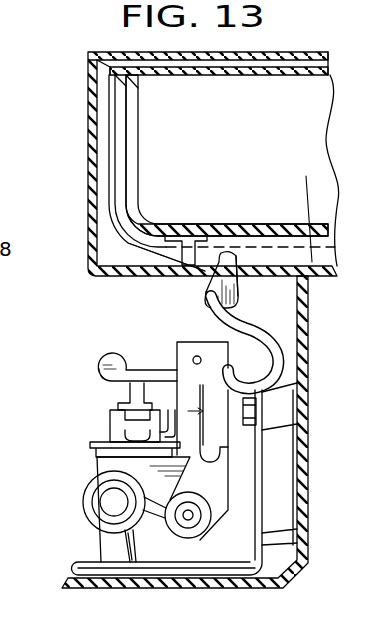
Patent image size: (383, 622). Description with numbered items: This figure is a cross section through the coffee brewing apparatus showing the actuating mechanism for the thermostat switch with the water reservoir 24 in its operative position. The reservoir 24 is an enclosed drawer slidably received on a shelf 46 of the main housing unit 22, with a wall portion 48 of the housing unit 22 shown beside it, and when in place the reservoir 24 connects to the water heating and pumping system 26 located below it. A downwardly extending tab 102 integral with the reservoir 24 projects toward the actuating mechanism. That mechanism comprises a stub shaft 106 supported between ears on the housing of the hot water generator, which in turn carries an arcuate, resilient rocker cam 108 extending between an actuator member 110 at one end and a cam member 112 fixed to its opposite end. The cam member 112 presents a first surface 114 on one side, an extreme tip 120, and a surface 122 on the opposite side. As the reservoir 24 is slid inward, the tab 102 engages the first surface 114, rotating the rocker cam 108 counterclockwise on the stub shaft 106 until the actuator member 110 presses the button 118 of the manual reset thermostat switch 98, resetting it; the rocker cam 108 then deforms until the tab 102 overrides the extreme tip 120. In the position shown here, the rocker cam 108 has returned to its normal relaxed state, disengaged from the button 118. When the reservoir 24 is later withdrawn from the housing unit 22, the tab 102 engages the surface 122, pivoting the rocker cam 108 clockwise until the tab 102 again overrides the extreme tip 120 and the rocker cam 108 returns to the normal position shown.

The main housing unit 22 is at (78, 132).
The water reservoir 24 is at (139, 103).
The water heating and pumping system 26 is at (76, 487).
The shelf 46 is at (313, 279).
The bottom wall 48 is at (307, 207).
The manual reset thermostat switch 98 is at (115, 428).
The tab 102 is at (160, 246).
The stub shaft 106 is at (194, 357).
The rocker cam 108 is at (284, 350).
The actuator member 110 is at (103, 358).
The cam member 112 is at (237, 258).
The first surface 114 is at (239, 291).
The button 118 is at (128, 396).
The extreme tip 120 is at (223, 250).
The surface 122 is at (200, 274).